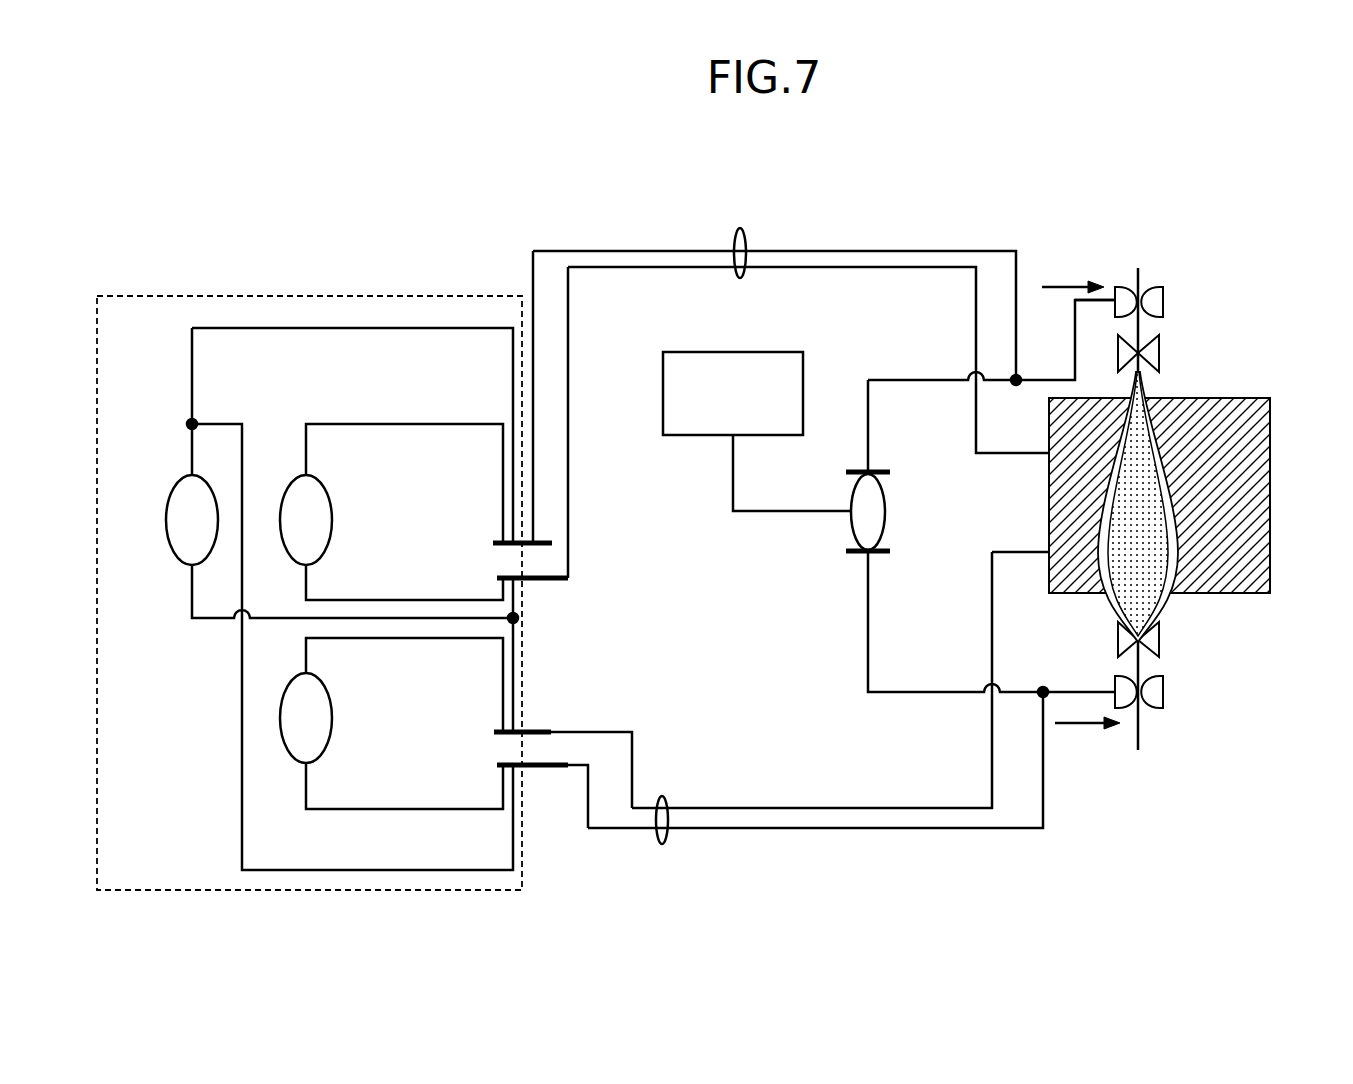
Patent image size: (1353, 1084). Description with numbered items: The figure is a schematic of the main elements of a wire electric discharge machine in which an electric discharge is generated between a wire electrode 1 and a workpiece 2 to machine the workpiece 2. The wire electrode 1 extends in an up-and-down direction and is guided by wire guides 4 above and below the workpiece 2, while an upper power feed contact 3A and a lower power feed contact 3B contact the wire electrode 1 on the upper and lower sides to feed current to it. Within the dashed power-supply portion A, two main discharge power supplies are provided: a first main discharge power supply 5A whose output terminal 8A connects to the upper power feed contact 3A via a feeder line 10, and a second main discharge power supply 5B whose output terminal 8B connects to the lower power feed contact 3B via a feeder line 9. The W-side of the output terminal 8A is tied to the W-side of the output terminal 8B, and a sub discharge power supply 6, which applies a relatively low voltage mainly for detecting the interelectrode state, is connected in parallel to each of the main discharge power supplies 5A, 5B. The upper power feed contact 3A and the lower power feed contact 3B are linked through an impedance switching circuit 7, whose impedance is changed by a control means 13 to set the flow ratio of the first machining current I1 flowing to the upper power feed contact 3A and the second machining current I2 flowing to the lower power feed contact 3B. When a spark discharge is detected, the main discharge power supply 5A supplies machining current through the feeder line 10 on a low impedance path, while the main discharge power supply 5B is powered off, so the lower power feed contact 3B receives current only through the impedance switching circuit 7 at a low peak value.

The wire electrode 1 is at (1143, 276).
The workpiece 2 is at (1270, 490).
The upper power feed contact 3A is at (1165, 300).
The lower power feed contact 3B is at (1165, 692).
The wire guide 4 is at (1160, 353).
The main discharge power supply 5A is at (333, 520).
The main discharge power supply 5B is at (333, 718).
The sub discharge power supply 6 is at (165, 520).
The impedance switching circuit 7 is at (855, 555).
The output terminal 8A is at (543, 562).
The output terminal 8B is at (572, 753).
The feeder line 9 is at (668, 818).
The feeder line 10 is at (745, 258).
The control means 13 is at (766, 351).
The power supply unit A is at (352, 296).
The first machining current I1 is at (1073, 276).
The second machining current I2 is at (1087, 737).